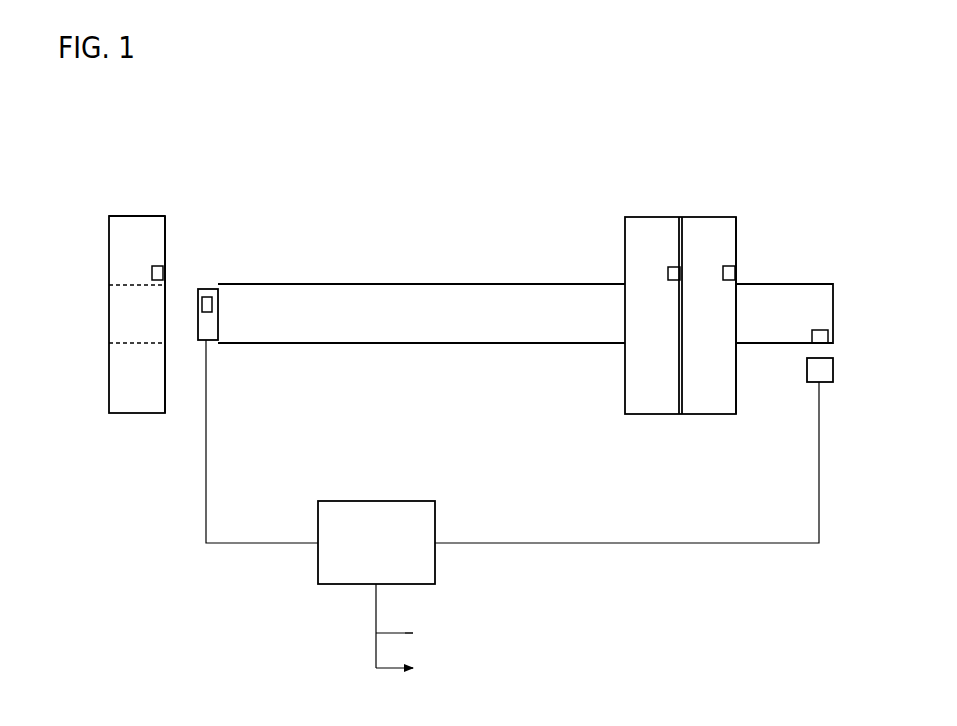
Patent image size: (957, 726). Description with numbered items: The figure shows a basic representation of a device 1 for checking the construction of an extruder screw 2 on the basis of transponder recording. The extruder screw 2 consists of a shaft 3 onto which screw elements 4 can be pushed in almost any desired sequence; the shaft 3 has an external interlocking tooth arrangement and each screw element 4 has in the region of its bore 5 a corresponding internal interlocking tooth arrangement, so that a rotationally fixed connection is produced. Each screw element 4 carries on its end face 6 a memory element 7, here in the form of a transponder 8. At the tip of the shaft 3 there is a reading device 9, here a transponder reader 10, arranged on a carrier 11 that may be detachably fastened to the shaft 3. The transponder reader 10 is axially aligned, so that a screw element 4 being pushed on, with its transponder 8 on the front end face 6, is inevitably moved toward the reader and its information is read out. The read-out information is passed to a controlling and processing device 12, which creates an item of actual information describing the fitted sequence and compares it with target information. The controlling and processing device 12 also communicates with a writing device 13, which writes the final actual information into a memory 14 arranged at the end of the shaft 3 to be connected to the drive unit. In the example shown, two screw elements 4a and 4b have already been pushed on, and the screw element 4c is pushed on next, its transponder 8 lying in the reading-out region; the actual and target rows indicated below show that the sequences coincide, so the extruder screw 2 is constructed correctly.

The device 1 is at (494, 167).
The extruder screw 2 is at (524, 257).
The shaft 3 is at (426, 302).
The screw element 4 is at (128, 205).
The screw element 4a is at (708, 217).
The screw element 4b is at (652, 215).
The screw element 4c is at (153, 230).
The bore 5 is at (120, 285).
The end face 6 is at (165, 237).
The memory element 7 is at (182, 268).
The transponder 8 is at (152, 273).
The reading device 9 is at (195, 310).
The transponder reader 10 is at (203, 295).
The carrier 11 is at (208, 340).
The controlling and processing device 12 is at (387, 501).
The writing device 13 is at (810, 385).
The memory 14 is at (812, 335).